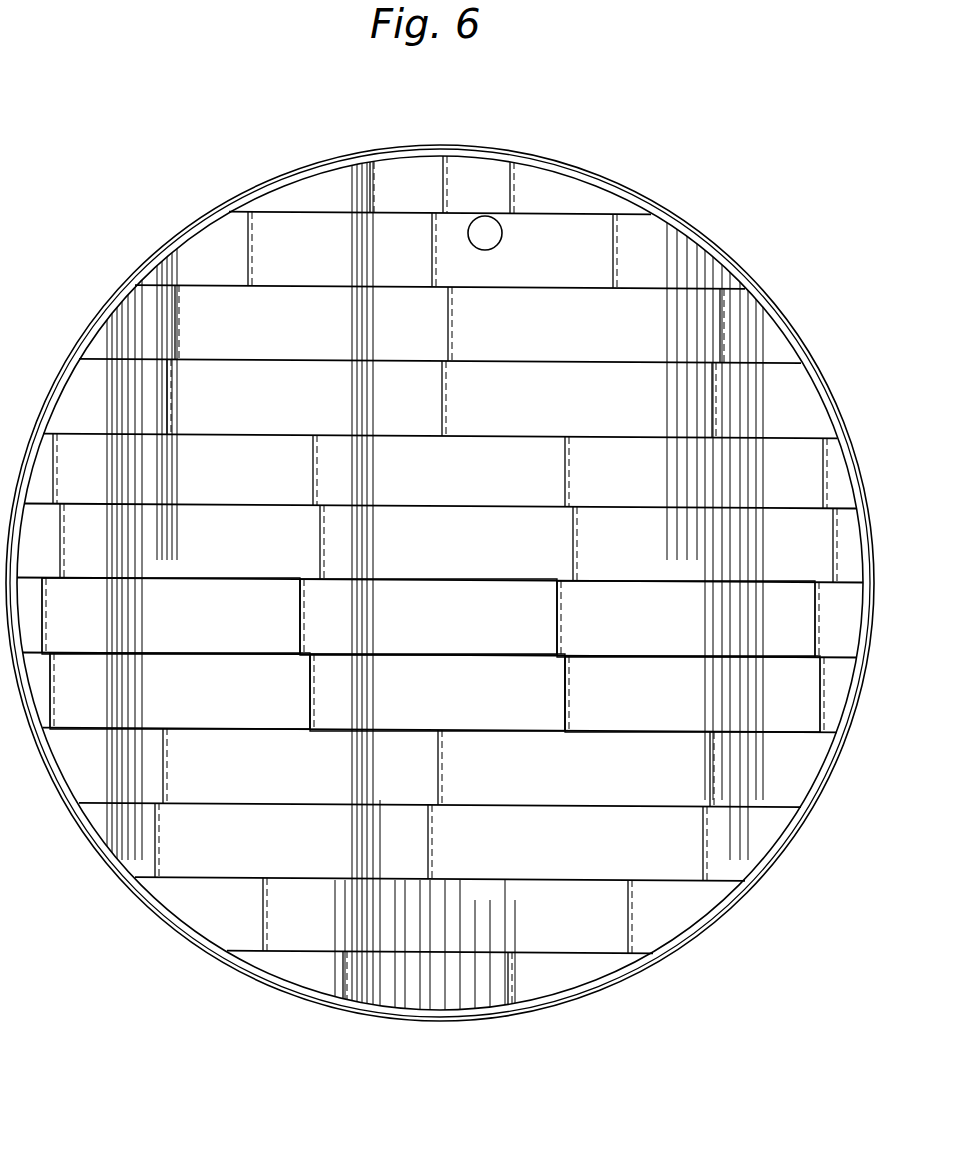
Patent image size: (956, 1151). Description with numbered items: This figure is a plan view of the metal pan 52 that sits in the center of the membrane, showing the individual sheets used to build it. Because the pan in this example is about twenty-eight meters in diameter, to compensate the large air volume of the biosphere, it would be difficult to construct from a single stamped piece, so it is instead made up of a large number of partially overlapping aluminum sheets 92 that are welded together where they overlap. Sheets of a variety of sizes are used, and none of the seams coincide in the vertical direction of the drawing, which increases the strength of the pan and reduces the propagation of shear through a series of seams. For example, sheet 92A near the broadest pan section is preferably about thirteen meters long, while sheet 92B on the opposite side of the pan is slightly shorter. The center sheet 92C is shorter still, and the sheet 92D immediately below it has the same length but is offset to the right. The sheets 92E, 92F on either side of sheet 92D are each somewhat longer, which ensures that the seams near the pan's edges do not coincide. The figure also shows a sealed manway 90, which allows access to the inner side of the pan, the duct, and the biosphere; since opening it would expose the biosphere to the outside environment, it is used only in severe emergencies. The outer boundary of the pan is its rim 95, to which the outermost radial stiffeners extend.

The metal pan 52 is at (232, 212).
The sealed manway 90 is at (495, 218).
The aluminum sheets 92 is at (632, 338).
The sheet 92A is at (215, 633).
The sheet 92B is at (715, 631).
The center sheet 92C is at (470, 625).
The sheet 92D is at (462, 708).
The sheet 92E is at (210, 705).
The sheet 92F is at (722, 709).
The rim 95 is at (762, 296).